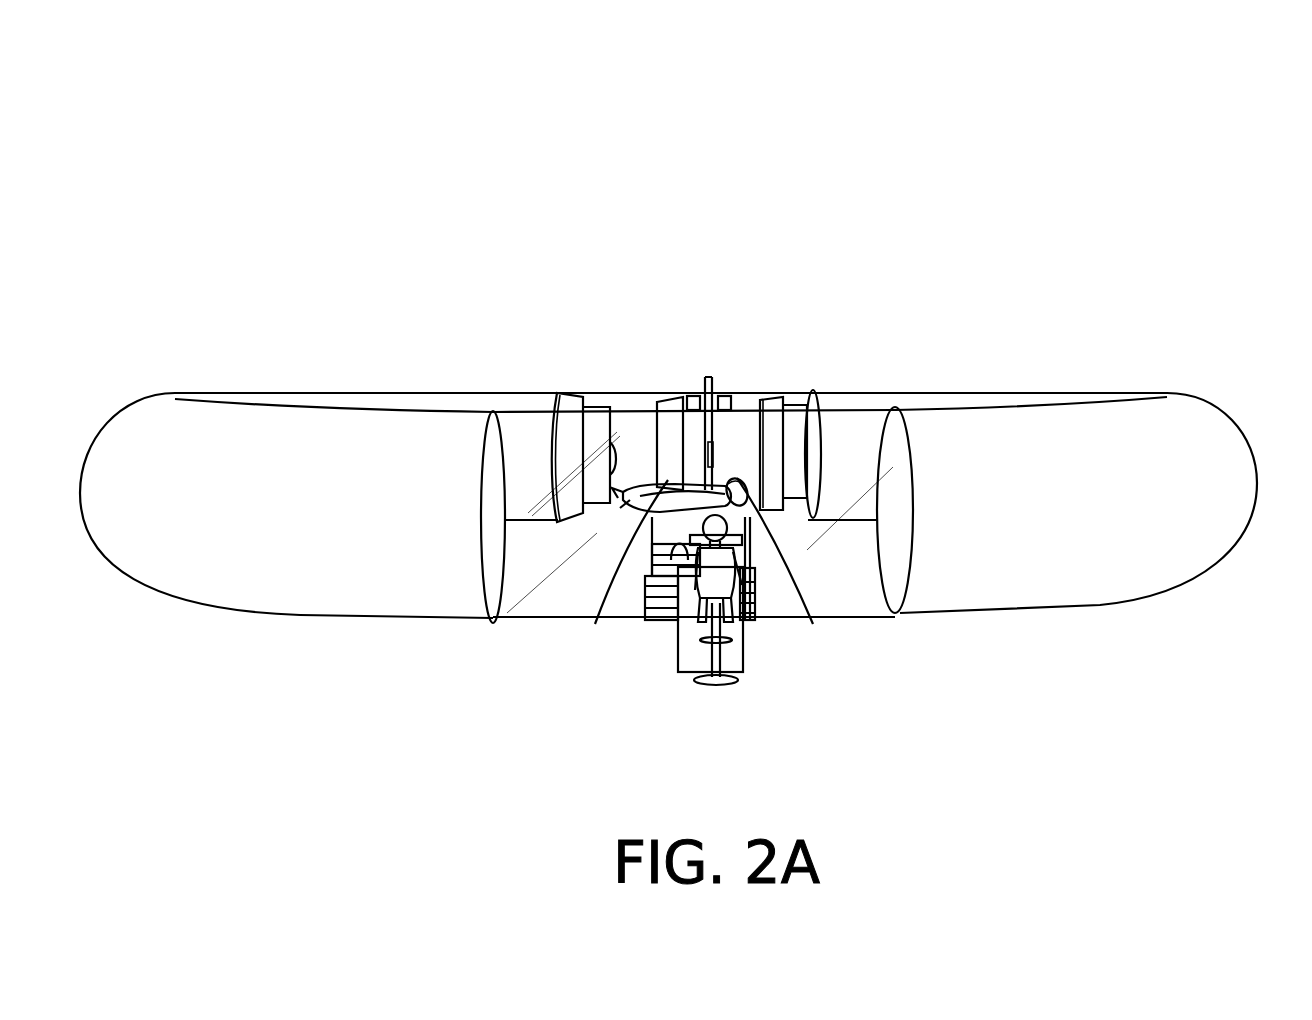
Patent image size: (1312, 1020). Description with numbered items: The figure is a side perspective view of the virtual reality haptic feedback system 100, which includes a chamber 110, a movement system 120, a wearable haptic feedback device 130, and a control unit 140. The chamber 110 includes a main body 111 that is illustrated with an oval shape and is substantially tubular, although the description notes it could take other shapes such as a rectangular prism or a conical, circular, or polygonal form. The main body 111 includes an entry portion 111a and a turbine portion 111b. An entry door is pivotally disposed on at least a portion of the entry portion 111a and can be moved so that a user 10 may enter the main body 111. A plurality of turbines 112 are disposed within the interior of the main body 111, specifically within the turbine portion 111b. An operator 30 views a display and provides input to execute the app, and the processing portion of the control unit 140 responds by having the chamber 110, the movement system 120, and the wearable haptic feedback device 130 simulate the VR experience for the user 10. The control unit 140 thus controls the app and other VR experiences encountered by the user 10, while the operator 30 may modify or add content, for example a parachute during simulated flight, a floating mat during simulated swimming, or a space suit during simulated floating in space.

The virtual reality haptic feedback system 100 is at (1147, 113).
The chamber 110 is at (1168, 215).
The main body 111 is at (1182, 427).
The entry portion 111a is at (862, 603).
The turbine portion 111b is at (633, 403).
The turbines 112 is at (580, 408).
The movement system 120 is at (719, 396).
The wearable haptic feedback device 130 is at (593, 624).
The control unit 140 is at (671, 548).
The operator 30 is at (743, 573).
The user 10 is at (813, 627).